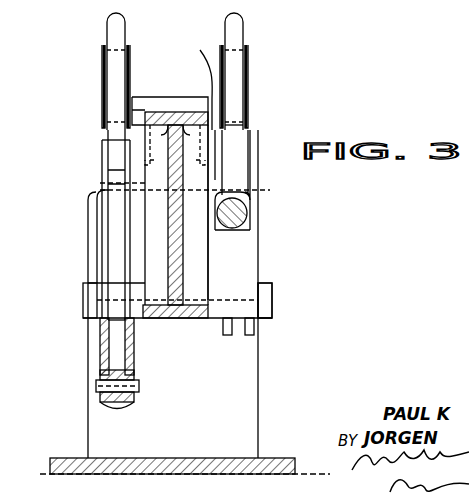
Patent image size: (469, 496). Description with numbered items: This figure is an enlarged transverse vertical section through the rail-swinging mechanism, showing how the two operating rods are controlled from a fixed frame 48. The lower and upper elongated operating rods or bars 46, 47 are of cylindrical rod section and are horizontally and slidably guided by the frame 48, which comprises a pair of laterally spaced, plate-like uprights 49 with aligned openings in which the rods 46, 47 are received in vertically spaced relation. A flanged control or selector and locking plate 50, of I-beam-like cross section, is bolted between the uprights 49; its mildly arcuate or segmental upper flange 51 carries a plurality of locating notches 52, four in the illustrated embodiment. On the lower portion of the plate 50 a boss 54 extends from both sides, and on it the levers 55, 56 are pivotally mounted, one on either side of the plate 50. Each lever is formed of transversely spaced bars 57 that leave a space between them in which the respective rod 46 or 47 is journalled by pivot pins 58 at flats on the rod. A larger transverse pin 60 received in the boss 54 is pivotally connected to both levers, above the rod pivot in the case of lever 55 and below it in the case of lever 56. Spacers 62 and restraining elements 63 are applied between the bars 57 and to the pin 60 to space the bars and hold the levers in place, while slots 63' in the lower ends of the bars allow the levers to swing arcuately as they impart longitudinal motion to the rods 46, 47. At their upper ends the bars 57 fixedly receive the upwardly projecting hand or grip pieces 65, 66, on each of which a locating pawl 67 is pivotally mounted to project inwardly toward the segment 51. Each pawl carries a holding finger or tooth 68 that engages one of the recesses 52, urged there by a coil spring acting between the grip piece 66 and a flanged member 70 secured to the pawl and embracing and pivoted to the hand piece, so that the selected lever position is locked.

The lower operating rod 46 is at (114, 404).
The upper operating rod 47 is at (246, 218).
The fixed frame 48 is at (284, 460).
The plate-like upright 49 is at (252, 430).
The control or selector and locking plate 50 is at (165, 214).
The upper flange 51 is at (196, 80).
The locating notch 52 is at (170, 118).
The boss 54 is at (210, 318).
The lever 55 is at (100, 253).
The lever 56 is at (255, 255).
The bar 57 is at (100, 181).
The pivot pin 58 is at (97, 386).
The transverse pin 60 is at (86, 298).
The spacer 62 is at (112, 320).
The restraining element 63 is at (285, 300).
The slot 63' is at (88, 376).
The hand or grip piece 65 is at (114, 131).
The hand or grip piece 66 is at (236, 118).
The locating pawl 67 is at (207, 98).
The holding finger or tooth 68 is at (213, 152).
The flanged member 70 is at (105, 64).